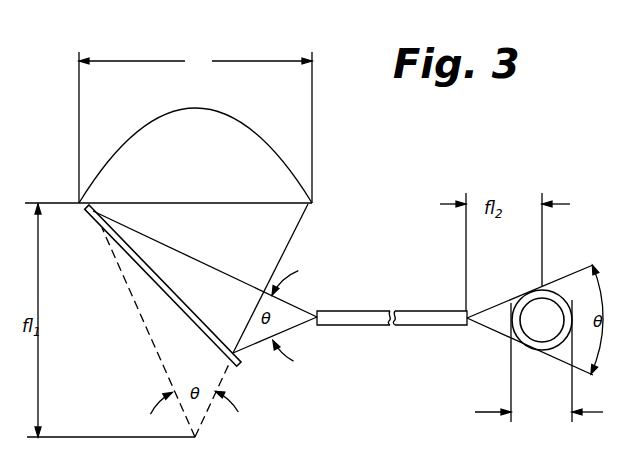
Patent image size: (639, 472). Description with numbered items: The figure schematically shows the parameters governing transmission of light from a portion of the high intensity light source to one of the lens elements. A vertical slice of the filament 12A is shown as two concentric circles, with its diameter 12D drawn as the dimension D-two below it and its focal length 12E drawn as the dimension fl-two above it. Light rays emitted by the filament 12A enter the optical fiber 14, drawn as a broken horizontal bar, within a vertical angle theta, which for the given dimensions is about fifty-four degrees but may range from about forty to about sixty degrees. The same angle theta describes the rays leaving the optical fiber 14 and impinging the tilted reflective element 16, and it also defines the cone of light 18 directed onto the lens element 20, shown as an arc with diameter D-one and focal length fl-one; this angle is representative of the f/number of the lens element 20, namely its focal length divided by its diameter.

The lens element 20 is at (257, 133).
The cone of light 18 is at (255, 232).
The reflective element 16 is at (182, 313).
The optical fiber 14 is at (413, 311).
The filament 12A is at (557, 291).
The focal length of the source 12E is at (497, 241).
The diameter of the filament 12D is at (539, 380).